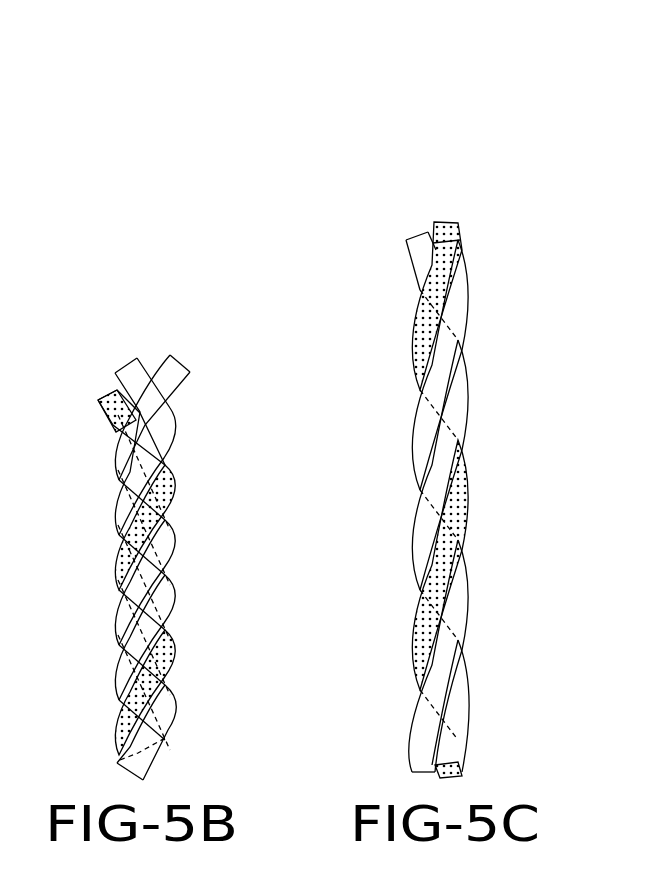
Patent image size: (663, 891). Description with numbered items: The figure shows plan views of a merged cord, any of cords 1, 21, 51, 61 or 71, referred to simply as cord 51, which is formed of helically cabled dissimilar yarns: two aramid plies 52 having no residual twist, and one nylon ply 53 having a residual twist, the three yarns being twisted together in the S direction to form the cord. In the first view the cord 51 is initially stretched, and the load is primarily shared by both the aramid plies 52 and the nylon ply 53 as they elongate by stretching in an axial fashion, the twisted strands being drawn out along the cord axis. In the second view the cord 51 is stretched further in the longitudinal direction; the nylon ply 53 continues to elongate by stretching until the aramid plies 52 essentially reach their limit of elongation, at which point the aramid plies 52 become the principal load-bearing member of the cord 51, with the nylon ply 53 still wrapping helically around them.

In FIG. 5B, the cord 1 is at (149, 513).
In FIG. 5C, the cord 1 is at (425, 440).
In FIG. 5B, the cord 21 is at (149, 513).
In FIG. 5C, the cord 21 is at (425, 440).
In FIG. 5B, the cord 51 is at (149, 513).
In FIG. 5C, the cord 51 is at (425, 440).
In FIG. 5B, the cord 61 is at (149, 513).
In FIG. 5C, the cord 61 is at (425, 440).
In FIG. 5B, the cord 71 is at (150, 356).
In FIG. 5C, the cord 71 is at (416, 211).
In FIG. 5B, the aramid ply 52 is at (158, 503).
In FIG. 5C, the aramid ply 52 is at (452, 503).
In FIG. 5B, the nylon ply 53 is at (158, 562).
In FIG. 5C, the nylon ply 53 is at (421, 440).